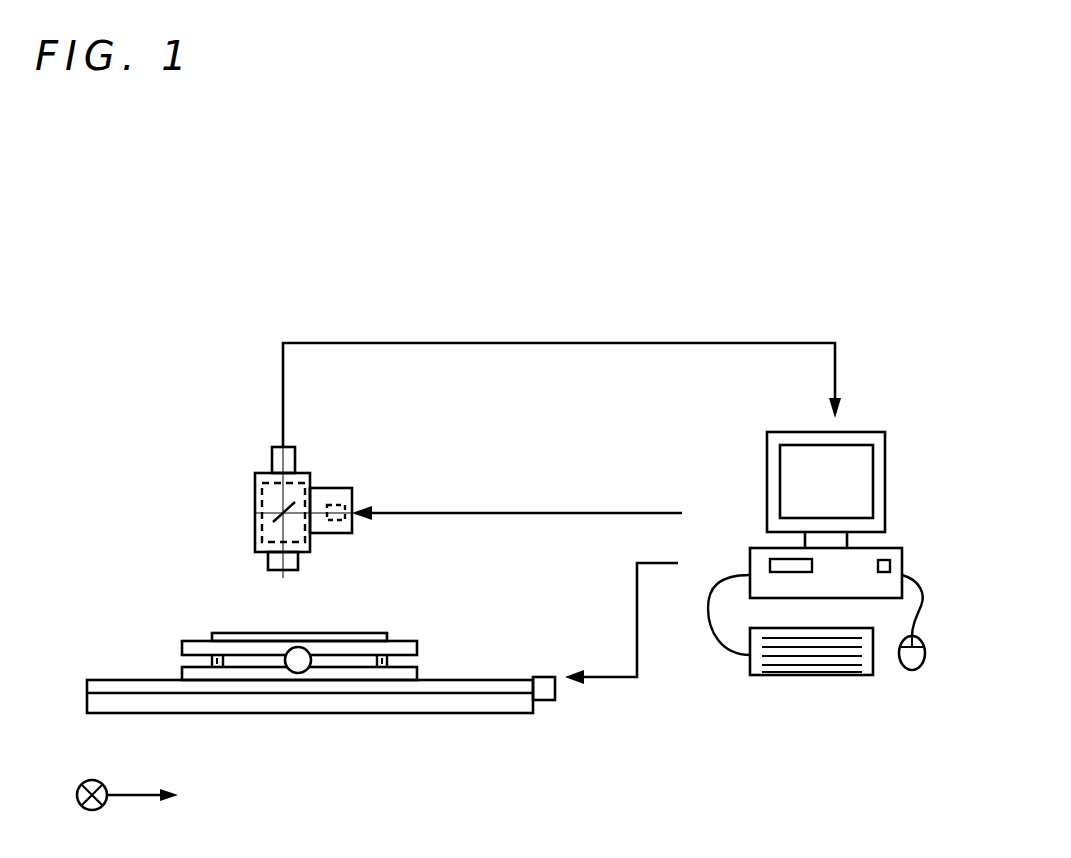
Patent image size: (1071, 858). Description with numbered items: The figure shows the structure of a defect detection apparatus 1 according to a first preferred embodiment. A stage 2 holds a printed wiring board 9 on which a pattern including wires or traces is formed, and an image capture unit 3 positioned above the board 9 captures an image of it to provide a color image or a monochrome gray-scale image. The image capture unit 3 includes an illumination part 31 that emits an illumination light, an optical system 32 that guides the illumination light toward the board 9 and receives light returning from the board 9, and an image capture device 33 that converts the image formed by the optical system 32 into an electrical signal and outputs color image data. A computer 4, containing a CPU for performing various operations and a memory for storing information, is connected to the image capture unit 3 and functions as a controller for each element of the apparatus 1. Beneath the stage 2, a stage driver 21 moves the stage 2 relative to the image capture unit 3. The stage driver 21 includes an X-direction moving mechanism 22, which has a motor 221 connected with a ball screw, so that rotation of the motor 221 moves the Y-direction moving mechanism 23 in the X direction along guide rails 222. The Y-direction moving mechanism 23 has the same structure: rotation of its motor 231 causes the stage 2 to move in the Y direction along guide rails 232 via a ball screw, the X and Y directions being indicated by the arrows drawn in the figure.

The defect detection apparatus 1 is at (235, 258).
The stage 2 is at (192, 640).
The image capture unit 3 is at (250, 452).
The computer 4 is at (870, 408).
The printed wiring board 9 is at (353, 633).
The stage driver 21 is at (445, 638).
The X-direction moving mechanism 22 is at (578, 707).
The Y-direction moving mechanism 23 is at (174, 661).
The illumination part 31 is at (345, 505).
The optical system 32 is at (255, 513).
The image capture device 33 is at (296, 462).
The motor 221 is at (543, 700).
The guide rails 222 is at (407, 688).
The motor 231 is at (298, 647).
The guide rails 232 is at (388, 660).